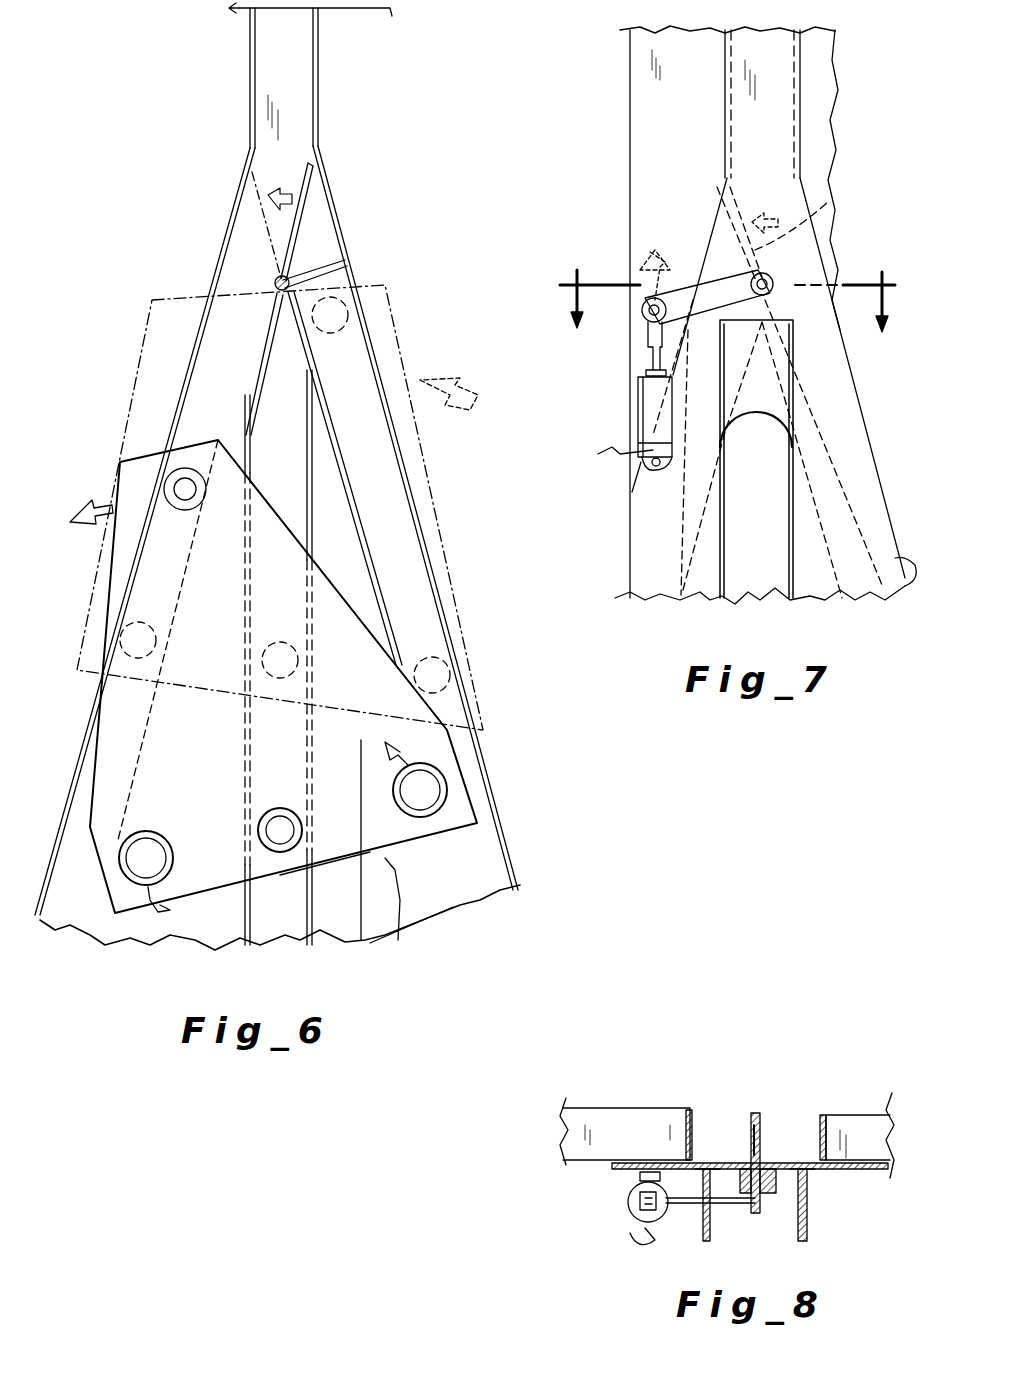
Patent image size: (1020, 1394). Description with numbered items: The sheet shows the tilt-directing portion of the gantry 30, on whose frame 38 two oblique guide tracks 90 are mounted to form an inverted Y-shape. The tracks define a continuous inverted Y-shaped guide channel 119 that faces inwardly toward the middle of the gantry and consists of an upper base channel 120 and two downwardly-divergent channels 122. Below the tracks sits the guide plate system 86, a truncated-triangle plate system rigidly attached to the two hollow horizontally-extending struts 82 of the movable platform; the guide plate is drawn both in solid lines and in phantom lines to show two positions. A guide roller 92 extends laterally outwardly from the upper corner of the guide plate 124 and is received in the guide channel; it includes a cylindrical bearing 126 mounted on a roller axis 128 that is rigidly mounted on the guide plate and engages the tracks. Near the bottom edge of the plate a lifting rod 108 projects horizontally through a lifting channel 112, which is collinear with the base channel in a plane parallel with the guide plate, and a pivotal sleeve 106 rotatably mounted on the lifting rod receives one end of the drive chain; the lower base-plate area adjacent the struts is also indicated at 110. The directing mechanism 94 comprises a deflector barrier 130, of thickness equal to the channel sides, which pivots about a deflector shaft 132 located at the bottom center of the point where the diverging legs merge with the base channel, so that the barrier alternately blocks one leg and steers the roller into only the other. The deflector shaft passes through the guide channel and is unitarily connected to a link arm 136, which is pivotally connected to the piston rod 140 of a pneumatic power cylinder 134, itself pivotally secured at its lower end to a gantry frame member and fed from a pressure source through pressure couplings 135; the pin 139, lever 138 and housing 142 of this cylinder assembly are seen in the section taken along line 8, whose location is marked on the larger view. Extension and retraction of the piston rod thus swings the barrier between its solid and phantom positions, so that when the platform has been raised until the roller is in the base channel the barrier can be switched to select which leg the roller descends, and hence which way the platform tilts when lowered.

In FIG. 6, the gantry 30 is at (352, 20).
In FIG. 6, the frame 38 is at (288, 10).
In FIG. 7, the frame 38 is at (812, 32).
In FIG. 6, the struts 82 is at (452, 788).
In FIG. 6, the guide plate system 86 is at (420, 340).
In FIG. 6, the oblique guide tracks 90 is at (320, 136).
In FIG. 7, the oblique guide tracks 90 is at (905, 582).
In FIG. 6, the guide roller 92 is at (389, 287).
In FIG. 7, the directing mechanism 94 is at (722, 182).
In FIG. 8, the directing mechanism 94 is at (772, 1082).
In FIG. 6, the pivotal sleeve 106 is at (190, 925).
In FIG. 6, the lifting rod 108 is at (300, 655).
In FIG. 6, the base plate 110 is at (395, 890).
In FIG. 6, the lifting channel 112 is at (306, 942).
In FIG. 7, the lifting channel 112 is at (720, 600).
In FIG. 6, the guide channel 119 is at (305, 97).
In FIG. 7, the guide channel 119 is at (838, 600).
In FIG. 8, the guide channel 119 is at (798, 1135).
In FIG. 6, the base channel 120 is at (270, 92).
In FIG. 7, the base channel 120 is at (790, 118).
In FIG. 6, the downwardly-divergent channels 122 is at (205, 297).
In FIG. 7, the downwardly-divergent channels 122 is at (832, 430).
In FIG. 6, the upper corner of the guide plate 124 is at (220, 440).
In FIG. 6, the cylindrical bearing 126 is at (162, 506).
In FIG. 6, the roller axis 128 is at (186, 505).
In FIG. 6, the deflector barrier 130 is at (252, 216).
In FIG. 7, the deflector barrier 130 is at (800, 222).
In FIG. 8, the deflector barrier 130 is at (762, 1118).
In FIG. 6, the deflector shaft 132 is at (298, 272).
In FIG. 7, the deflector shaft 132 is at (770, 280).
In FIG. 8, the deflector shaft 132 is at (762, 1192).
In FIG. 7, the pneumatic power cylinder 134 is at (652, 464).
In FIG. 7, the pressure couplings 135 is at (615, 452).
In FIG. 8, the pressure couplings 135 is at (634, 1244).
In FIG. 7, the link arm 136 is at (686, 290).
In FIG. 8, the link arm 136 is at (702, 1216).
In FIG. 7, the lever 138 is at (650, 340).
In FIG. 8, the pin 139 is at (622, 1202).
In FIG. 7, the piston rod 140 is at (645, 372).
In FIG. 7, the housing 142 is at (640, 414).
In FIG. 8, the housing 142 is at (620, 1194).
In FIG. 7, the section line 8- 8 is at (727, 317).